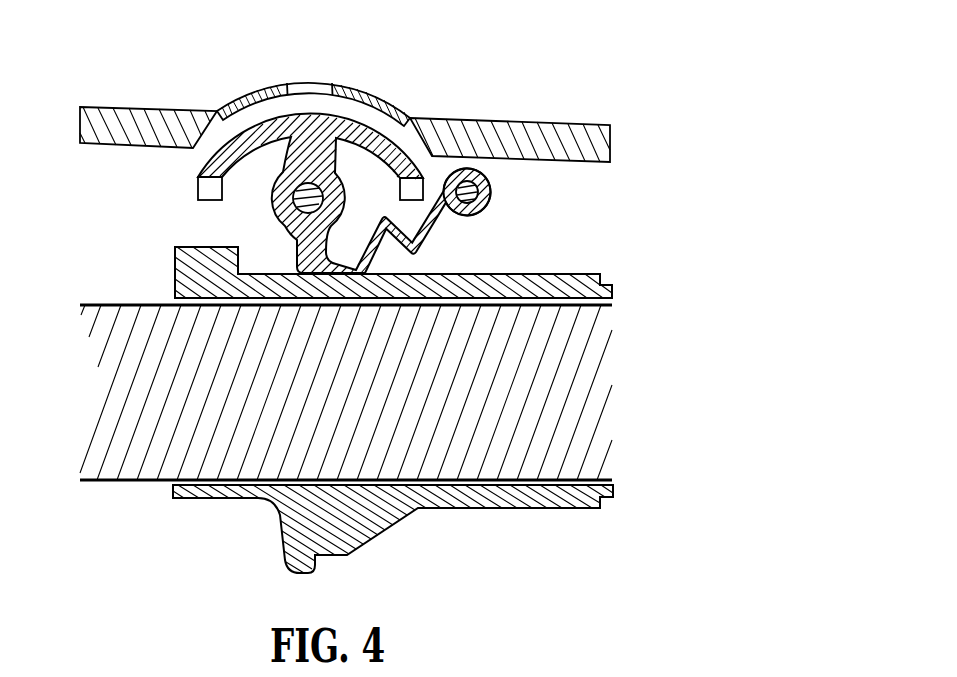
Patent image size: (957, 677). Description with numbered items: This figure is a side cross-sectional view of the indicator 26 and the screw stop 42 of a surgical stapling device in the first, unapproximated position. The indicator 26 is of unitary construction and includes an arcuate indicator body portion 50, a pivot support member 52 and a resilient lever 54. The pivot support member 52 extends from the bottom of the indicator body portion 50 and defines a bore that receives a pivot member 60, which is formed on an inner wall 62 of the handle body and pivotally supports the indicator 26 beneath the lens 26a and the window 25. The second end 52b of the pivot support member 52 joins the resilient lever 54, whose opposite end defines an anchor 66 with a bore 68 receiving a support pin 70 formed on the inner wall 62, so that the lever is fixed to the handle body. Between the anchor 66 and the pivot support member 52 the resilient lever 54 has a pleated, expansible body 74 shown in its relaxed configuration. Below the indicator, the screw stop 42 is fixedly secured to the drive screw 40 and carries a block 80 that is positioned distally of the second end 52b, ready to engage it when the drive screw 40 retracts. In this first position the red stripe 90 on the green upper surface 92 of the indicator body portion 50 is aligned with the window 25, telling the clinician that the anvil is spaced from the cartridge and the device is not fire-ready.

The window 25 is at (318, 80).
The indicator 26 is at (373, 122).
The lens 26a is at (288, 82).
The drive screw 40 is at (128, 481).
The screw stop 42 is at (580, 270).
The indicator body portion 50 is at (397, 146).
The pivot support member 52 is at (273, 215).
The second end 52b is at (297, 257).
The resilient lever 54 is at (435, 229).
The pivot member 60 is at (323, 199).
The inner wall 62 is at (540, 177).
The anchor 66 is at (477, 188).
The bore 68 is at (487, 204).
The support pin 70 is at (463, 183).
The expansible body 74 is at (416, 259).
The block 80 is at (182, 263).
The red stripe 90 is at (309, 114).
The green upper surface 92 is at (218, 147).